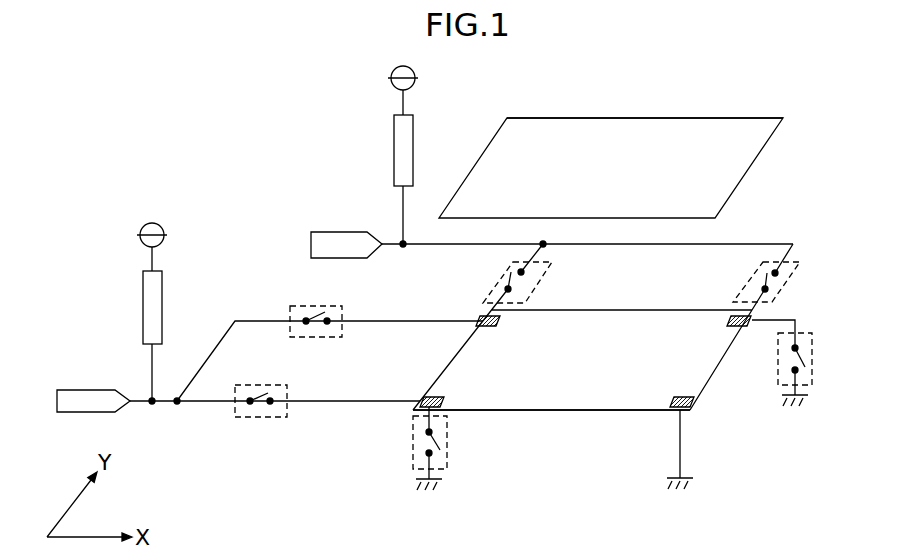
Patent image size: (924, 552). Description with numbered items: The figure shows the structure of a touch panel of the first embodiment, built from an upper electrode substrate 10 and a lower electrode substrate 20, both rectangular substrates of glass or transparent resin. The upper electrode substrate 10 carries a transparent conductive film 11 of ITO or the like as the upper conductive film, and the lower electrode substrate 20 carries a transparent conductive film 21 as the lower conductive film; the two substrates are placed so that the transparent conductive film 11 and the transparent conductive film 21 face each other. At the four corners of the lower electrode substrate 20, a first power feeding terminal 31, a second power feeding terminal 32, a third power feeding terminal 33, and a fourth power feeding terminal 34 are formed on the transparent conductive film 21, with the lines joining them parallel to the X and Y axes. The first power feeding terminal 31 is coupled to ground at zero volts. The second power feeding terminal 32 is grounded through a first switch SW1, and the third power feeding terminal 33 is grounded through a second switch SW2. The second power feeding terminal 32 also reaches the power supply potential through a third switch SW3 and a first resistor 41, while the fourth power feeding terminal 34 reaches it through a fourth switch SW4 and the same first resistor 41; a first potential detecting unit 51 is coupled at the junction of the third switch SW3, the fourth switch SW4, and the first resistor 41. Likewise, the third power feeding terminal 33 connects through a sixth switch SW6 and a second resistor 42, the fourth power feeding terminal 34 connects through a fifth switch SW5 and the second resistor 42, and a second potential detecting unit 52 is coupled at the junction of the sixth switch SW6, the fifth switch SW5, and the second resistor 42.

The upper electrode substrate 10 is at (643, 118).
The transparent conductive film 11 is at (696, 135).
The lower electrode substrate 20 is at (538, 412).
The transparent conductive film 21 is at (600, 387).
The first power feeding terminal 31 is at (694, 408).
The second power feeding terminal 32 is at (738, 328).
The third power feeding terminal 33 is at (428, 397).
The fourth power feeding terminal 34 is at (482, 314).
The first resistor 41 is at (394, 152).
The second resistor 42 is at (143, 310).
The first potential detecting unit 51 is at (337, 232).
The second potential detecting unit 52 is at (83, 390).
The first switch SW1 is at (813, 355).
The second switch SW2 is at (411, 445).
The third switch SW3 is at (787, 279).
The fourth switch SW4 is at (538, 278).
The fifth switch SW5 is at (317, 338).
The sixth switch SW6 is at (262, 418).